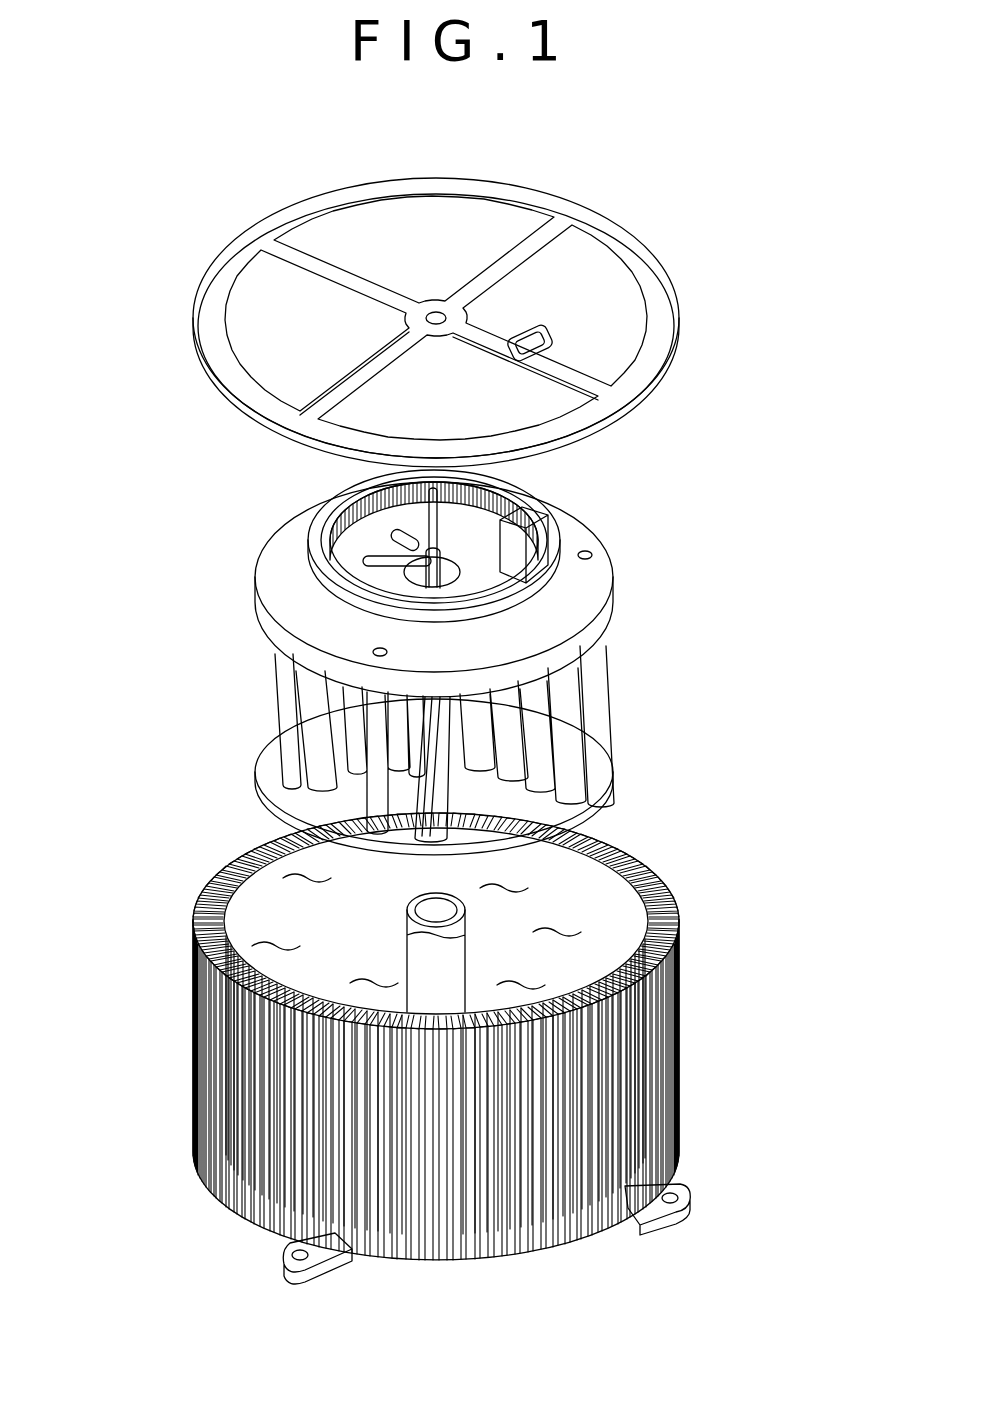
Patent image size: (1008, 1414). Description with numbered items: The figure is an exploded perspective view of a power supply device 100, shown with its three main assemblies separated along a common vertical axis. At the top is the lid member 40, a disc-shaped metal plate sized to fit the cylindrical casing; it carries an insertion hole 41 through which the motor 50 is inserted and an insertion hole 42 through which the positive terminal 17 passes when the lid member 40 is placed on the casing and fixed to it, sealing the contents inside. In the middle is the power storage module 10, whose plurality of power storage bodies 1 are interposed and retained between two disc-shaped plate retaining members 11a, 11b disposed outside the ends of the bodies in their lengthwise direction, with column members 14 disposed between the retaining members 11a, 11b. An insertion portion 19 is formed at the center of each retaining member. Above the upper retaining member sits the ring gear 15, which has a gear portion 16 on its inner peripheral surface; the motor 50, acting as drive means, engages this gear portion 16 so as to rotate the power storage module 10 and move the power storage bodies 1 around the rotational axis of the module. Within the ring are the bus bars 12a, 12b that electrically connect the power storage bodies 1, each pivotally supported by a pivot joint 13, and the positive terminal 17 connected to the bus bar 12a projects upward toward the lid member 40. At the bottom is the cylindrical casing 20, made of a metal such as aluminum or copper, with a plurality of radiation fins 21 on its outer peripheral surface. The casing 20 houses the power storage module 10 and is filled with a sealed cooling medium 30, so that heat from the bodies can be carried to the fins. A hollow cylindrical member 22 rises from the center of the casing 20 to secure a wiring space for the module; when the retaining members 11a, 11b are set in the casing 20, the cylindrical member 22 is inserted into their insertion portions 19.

The power supply device 100 is at (777, 365).
The lid member 40 is at (647, 247).
The insertion hole 41 is at (547, 340).
The insertion hole 42 is at (435, 308).
The power storage module 10 is at (252, 545).
The positive terminal 17 is at (513, 472).
The gear portion 16 is at (437, 500).
The ring gear 15 is at (360, 562).
The pivot joints 13 is at (462, 572).
The bus bar 12a is at (395, 535).
The bus bar 12b is at (378, 553).
The motor 50 is at (545, 540).
The power storage bodies 1 is at (570, 725).
The retaining member 11a is at (600, 621).
The retaining member 11b is at (595, 795).
The column members 14 is at (377, 807).
The insertion portion 19 is at (413, 740).
The casing 20 is at (678, 1100).
The radiation fins 21 is at (500, 1258).
The hollow cylindrical member 22 is at (407, 957).
The cooling medium 30 is at (567, 900).